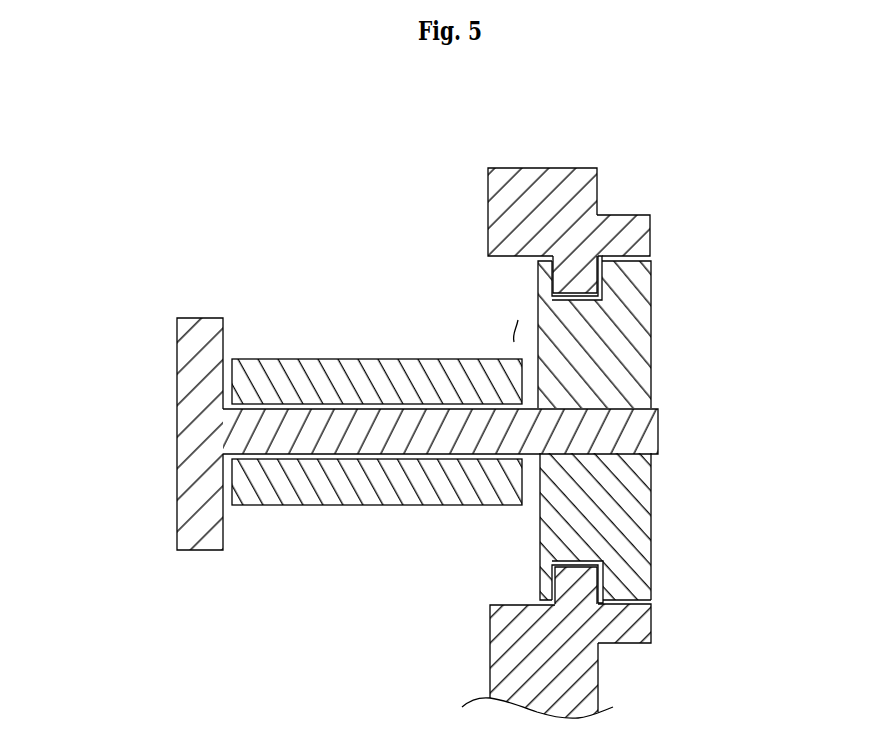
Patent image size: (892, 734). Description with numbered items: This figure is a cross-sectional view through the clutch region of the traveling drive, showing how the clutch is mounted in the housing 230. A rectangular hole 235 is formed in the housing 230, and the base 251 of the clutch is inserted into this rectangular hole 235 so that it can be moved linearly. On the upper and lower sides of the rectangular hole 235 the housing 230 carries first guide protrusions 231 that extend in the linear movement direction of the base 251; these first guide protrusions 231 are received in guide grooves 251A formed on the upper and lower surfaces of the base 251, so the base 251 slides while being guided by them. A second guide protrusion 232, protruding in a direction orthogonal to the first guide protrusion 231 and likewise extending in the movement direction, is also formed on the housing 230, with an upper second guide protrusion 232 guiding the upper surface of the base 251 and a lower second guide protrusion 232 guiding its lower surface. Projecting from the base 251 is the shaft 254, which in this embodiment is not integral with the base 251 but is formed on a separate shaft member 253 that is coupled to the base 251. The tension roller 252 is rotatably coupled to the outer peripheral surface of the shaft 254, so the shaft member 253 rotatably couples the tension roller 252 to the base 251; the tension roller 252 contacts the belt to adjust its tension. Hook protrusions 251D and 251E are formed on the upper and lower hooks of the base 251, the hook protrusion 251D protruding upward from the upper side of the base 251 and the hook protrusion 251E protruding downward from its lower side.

The housing 230 is at (530, 168).
The first guide protrusion 231 is at (598, 292).
The second guide protrusion 232 is at (640, 235).
The rectangular hole 235 is at (513, 327).
The base 251 is at (650, 342).
The guide groove 251A is at (578, 300).
The hook protrusion 251D is at (573, 278).
The hook protrusion 251E is at (645, 598).
The tension roller 252 is at (345, 358).
The shaft member 253 is at (197, 422).
The shaft 254 is at (340, 428).